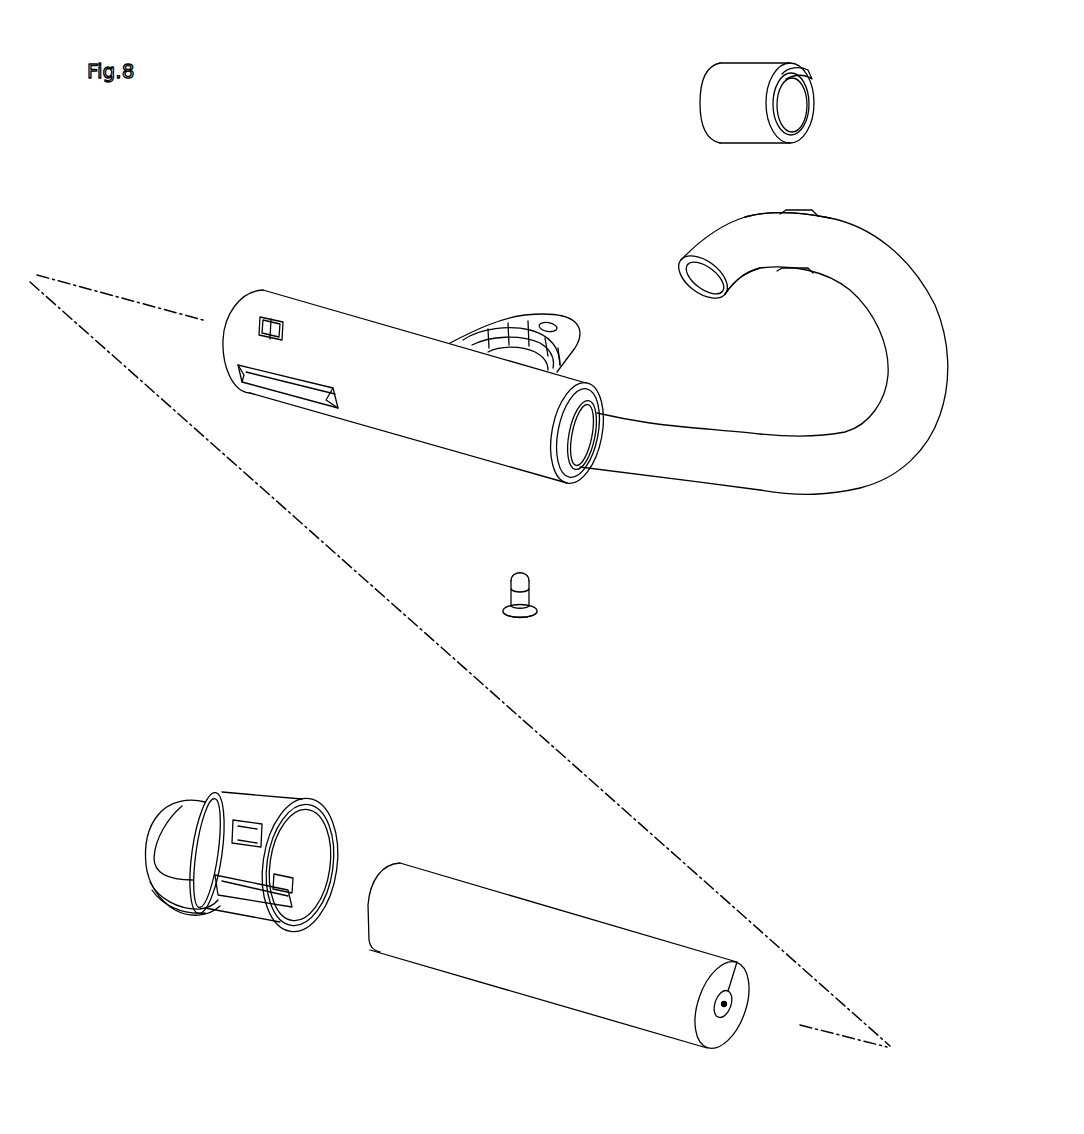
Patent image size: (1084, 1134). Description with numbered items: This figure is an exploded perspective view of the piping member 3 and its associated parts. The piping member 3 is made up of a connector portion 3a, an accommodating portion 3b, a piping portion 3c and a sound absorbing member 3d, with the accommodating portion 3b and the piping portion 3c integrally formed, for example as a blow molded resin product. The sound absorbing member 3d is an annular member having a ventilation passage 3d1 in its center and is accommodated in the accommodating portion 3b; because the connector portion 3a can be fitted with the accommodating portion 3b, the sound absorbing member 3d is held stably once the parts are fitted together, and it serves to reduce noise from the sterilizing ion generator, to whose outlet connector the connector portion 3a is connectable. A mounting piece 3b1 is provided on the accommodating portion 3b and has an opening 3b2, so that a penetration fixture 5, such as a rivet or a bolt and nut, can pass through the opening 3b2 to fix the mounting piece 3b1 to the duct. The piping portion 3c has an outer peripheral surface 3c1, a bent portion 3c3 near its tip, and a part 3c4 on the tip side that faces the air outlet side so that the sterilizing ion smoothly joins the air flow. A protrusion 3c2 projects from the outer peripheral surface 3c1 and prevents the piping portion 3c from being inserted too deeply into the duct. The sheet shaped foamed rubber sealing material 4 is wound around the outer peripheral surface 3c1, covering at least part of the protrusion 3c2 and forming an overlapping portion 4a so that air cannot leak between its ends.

The piping member 3 is at (388, 223).
The connector portion 3a is at (215, 780).
The accommodating portion 3b is at (420, 458).
The mounting piece 3b1 is at (523, 320).
The opening 3b2 is at (545, 308).
The piping portion 3c is at (893, 233).
The outer peripheral surface 3c1 is at (765, 225).
The protrusion 3c2 is at (800, 210).
The bent portion 3c3 is at (747, 267).
The part on tip side 3c4 is at (700, 253).
The sound absorbing member 3d is at (477, 870).
The ventilation passage 3d1 is at (724, 1004).
The sealing material 4 is at (688, 86).
The overlapping portion 4a is at (797, 70).
The penetration fixture 5 is at (500, 588).